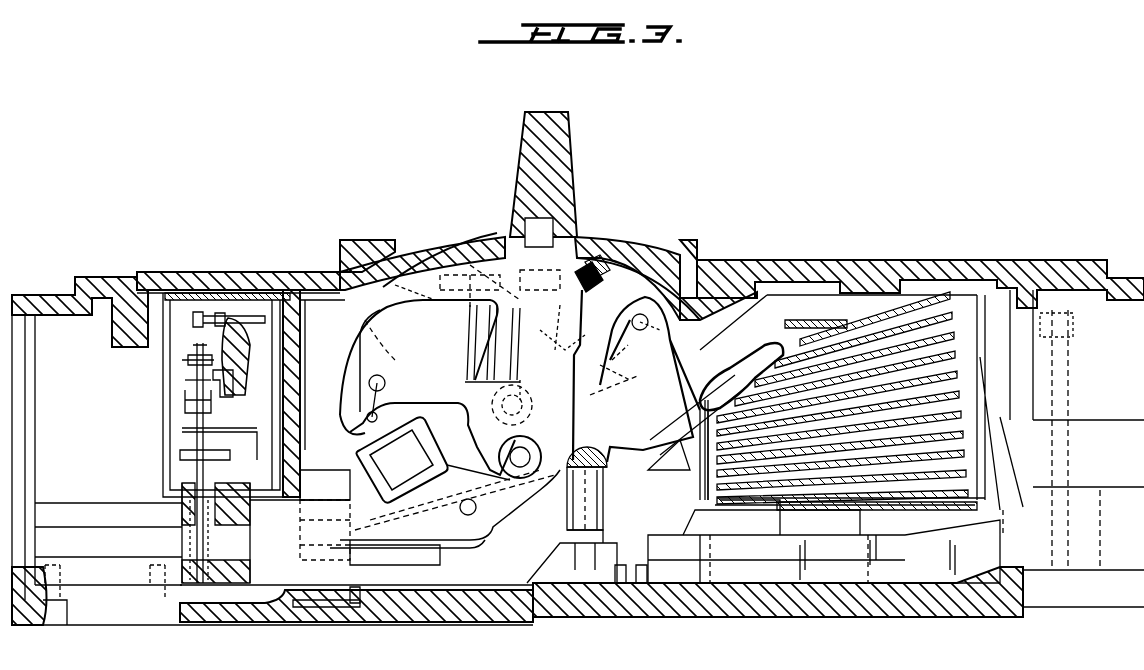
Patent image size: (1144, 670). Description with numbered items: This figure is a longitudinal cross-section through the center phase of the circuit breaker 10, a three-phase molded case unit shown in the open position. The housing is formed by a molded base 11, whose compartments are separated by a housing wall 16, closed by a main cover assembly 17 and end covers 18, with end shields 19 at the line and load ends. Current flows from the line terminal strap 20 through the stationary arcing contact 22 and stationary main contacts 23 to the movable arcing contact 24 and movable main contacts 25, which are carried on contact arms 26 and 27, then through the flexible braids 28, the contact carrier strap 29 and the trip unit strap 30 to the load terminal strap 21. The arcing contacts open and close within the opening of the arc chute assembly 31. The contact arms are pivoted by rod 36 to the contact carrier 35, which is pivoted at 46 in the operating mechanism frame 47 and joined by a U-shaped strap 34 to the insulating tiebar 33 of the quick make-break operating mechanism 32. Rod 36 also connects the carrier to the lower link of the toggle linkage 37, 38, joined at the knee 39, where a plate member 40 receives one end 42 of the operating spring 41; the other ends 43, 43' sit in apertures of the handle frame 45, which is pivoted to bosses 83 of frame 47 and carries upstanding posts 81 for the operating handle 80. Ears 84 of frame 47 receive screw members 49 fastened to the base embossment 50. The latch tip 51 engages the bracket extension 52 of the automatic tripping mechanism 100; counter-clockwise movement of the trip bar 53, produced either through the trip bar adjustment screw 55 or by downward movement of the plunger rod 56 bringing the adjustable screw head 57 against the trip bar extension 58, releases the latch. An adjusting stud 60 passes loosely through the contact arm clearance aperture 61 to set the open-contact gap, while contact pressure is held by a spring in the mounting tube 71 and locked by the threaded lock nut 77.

The circuit breaker 10 is at (721, 182).
The molded base 11 is at (665, 605).
The housing wall 16 is at (620, 325).
The main cover assembly 17 is at (788, 262).
The end cover 18 is at (33, 295).
The end shield 19 is at (35, 388).
The line terminal strap 20 is at (900, 573).
The load terminal strap 21 is at (116, 549).
The stationary arcing contact 22 is at (750, 510).
The stationary main contact 23 is at (683, 535).
The movable arcing contact 24 is at (689, 455).
The movable main contact 25 is at (669, 465).
The contact arm 26 is at (740, 375).
The contact arm 27 is at (697, 415).
The flexible braid 28 is at (490, 540).
The contact carrier strap 29 is at (410, 565).
The trip unit strap 30 is at (270, 527).
The arc chute assembly 31 is at (909, 324).
The operating mechanism 32 is at (424, 359).
The insulating tiebar 33 is at (410, 470).
The U-shaped strap 34 is at (475, 455).
The contact carrier 35 is at (358, 520).
The pivot rod 36 is at (636, 376).
The toggle link 37 is at (514, 445).
The toggle link 38 is at (500, 287).
The knee 39 is at (522, 411).
The plate member 40 is at (458, 400).
The operating spring 41 is at (475, 330).
The spring end 42 is at (458, 375).
The spring end 43 is at (441, 238).
The spring end 43' is at (638, 254).
The operating handle frame 45 is at (605, 265).
The carrier pivot 46 is at (464, 496).
The operating mechanism frame 47 is at (505, 515).
The screw member 49 is at (607, 463).
The base embossment 50 is at (610, 543).
The latch tip 51 is at (415, 289).
The bracket extension 52 is at (391, 334).
The trip bar 53 is at (243, 368).
The trip bar adjustment screw 55 is at (265, 310).
The instantaneous trip plunger rod 56 is at (190, 380).
The adjustable screw head 57 is at (205, 350).
The trip bar extension 58 is at (211, 399).
The adjusting stud 60 is at (624, 347).
The contact arm clearance aperture 61 is at (615, 394).
The mounting tube 71 is at (651, 335).
The threaded lock nut 77 is at (563, 337).
The operating handle 80 is at (570, 175).
The upstanding post 81 is at (530, 220).
The boss 83 is at (518, 468).
The ear 84 is at (601, 498).
The automatic tripping mechanism 100 is at (260, 430).